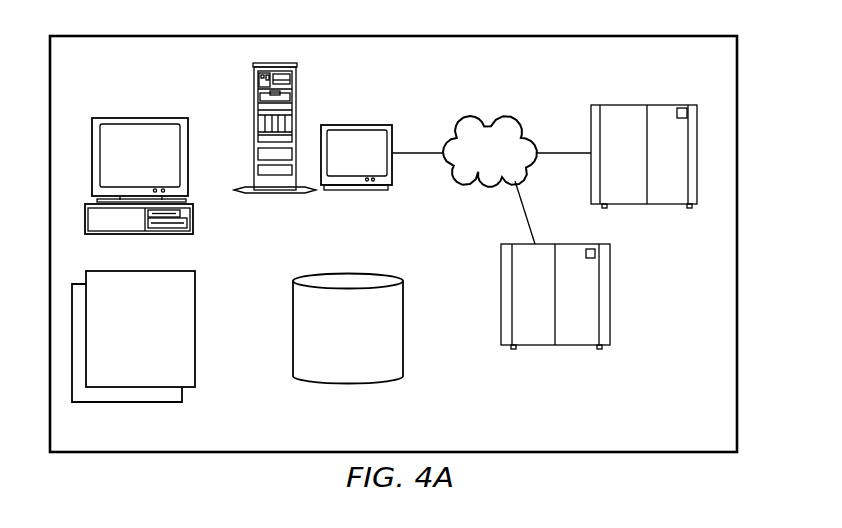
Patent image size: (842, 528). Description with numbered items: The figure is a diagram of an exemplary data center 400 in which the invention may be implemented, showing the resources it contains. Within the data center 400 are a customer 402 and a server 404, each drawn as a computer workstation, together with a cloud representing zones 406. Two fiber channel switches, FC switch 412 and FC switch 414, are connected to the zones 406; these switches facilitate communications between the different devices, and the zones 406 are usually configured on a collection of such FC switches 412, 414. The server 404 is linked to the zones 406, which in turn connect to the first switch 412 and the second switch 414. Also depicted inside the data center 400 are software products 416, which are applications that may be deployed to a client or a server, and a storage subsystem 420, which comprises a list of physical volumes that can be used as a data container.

The data center 400 is at (199, 456).
The customer 402 is at (139, 117).
The server 404 is at (358, 123).
The zones 406 is at (506, 115).
The fiber channel (FC) switch 412 is at (663, 204).
The fiber channel (FC) switch 414 is at (572, 345).
The software products 416 is at (195, 328).
The storage subsystem 420 is at (403, 328).